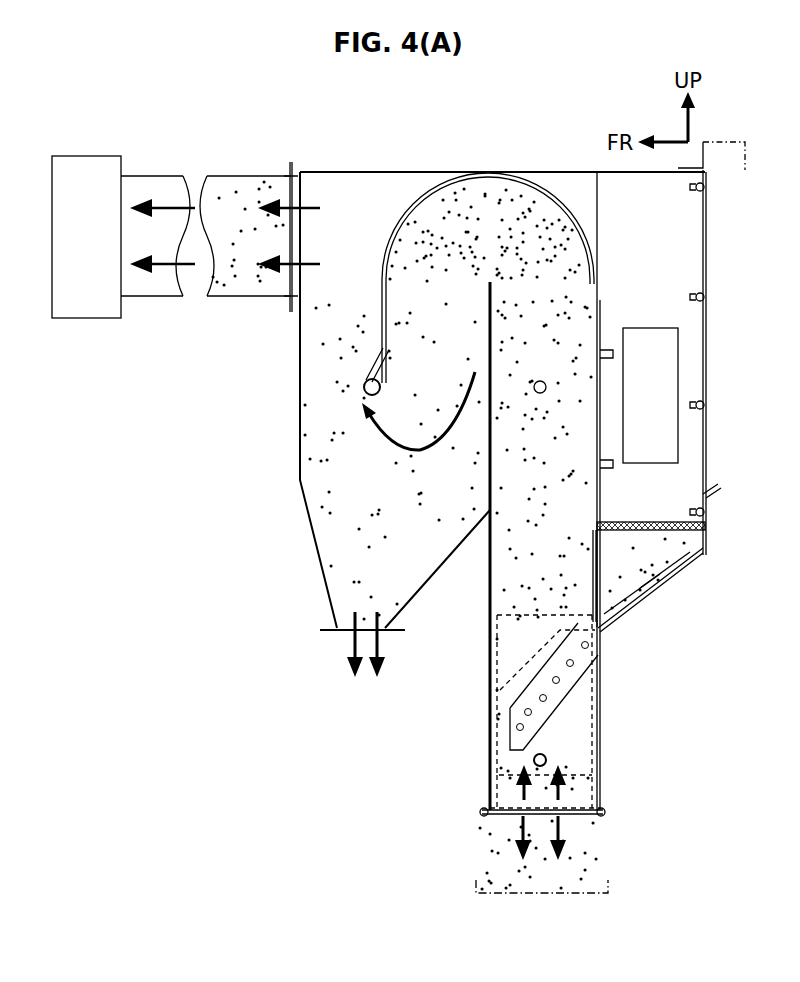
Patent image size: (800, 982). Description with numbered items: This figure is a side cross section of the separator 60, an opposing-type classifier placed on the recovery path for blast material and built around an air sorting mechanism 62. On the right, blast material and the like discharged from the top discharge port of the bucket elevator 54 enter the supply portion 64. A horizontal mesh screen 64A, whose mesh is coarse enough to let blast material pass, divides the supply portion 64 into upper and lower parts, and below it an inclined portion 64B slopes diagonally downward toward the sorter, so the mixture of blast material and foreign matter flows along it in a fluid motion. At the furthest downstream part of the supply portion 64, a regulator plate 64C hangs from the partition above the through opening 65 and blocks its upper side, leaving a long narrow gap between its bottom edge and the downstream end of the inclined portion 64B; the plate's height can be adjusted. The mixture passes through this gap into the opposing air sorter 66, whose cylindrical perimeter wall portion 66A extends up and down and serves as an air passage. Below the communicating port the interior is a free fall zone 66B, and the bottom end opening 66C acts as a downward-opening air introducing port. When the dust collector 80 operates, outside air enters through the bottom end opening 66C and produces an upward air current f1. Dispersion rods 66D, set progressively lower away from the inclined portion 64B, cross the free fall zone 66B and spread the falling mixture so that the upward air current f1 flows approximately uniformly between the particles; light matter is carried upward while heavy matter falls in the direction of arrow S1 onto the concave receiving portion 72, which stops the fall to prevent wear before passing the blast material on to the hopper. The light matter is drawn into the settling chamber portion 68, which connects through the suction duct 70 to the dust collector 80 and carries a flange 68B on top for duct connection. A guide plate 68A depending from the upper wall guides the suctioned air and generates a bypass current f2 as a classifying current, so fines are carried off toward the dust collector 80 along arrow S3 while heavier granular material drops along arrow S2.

The dust collector 80 is at (88, 156).
The suction duct 70 is at (246, 176).
The settling chamber portion 68 is at (385, 171).
The guide plate 68A is at (398, 339).
The flange 68B is at (298, 162).
The separator 60 is at (518, 160).
The air sorting mechanism 62 is at (578, 200).
The opposing air sorter 66 is at (600, 290).
The perimeter wall portion 66A is at (498, 631).
The free fall zone 66B is at (499, 721).
The bottom end opening 66C is at (488, 815).
The dispersion rods 66D is at (525, 727).
The supply portion 64 is at (708, 538).
The screen 64A is at (650, 523).
The inclined portion 64B is at (656, 583).
The regulator plate 64C is at (614, 600).
The through opening 65 is at (600, 589).
The bucket elevator 54 is at (722, 140).
The receiving portion 72 is at (614, 889).
The arrow S1 direction S1 is at (510, 838).
The arrow S2 is at (350, 653).
The arrow S3 is at (166, 202).
The upward air current f1 is at (516, 787).
The bypass current f2 is at (384, 445).